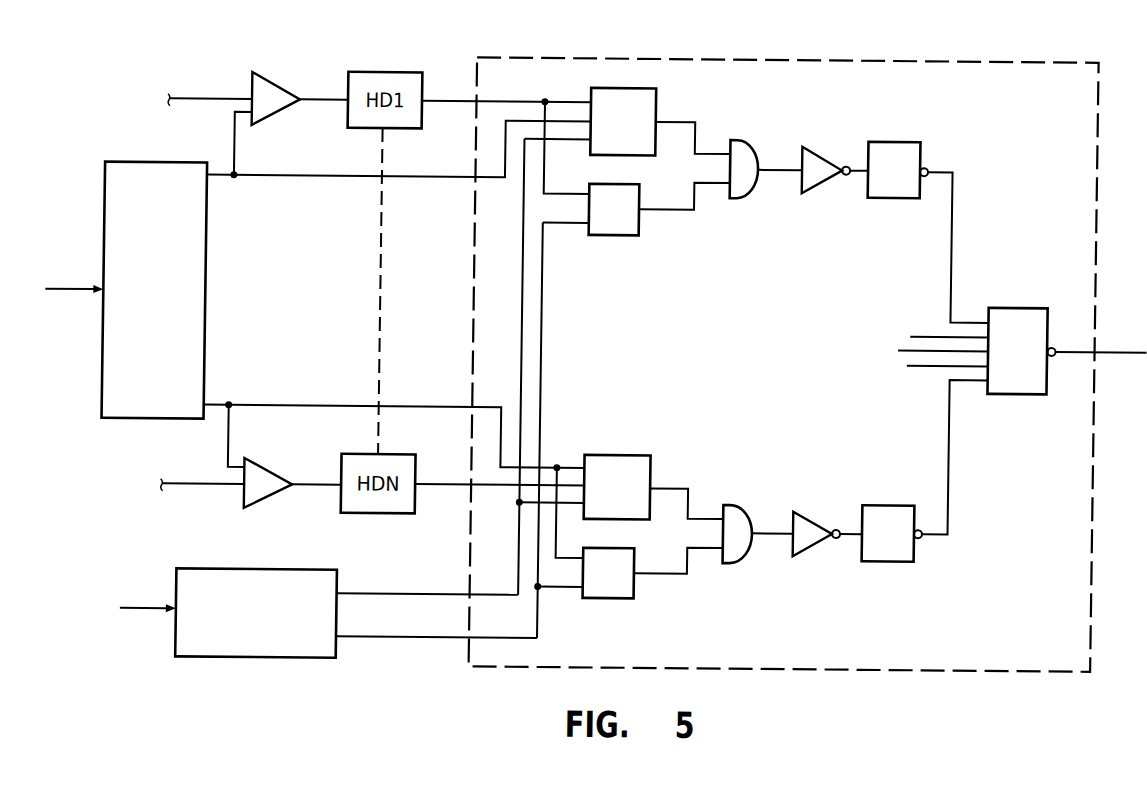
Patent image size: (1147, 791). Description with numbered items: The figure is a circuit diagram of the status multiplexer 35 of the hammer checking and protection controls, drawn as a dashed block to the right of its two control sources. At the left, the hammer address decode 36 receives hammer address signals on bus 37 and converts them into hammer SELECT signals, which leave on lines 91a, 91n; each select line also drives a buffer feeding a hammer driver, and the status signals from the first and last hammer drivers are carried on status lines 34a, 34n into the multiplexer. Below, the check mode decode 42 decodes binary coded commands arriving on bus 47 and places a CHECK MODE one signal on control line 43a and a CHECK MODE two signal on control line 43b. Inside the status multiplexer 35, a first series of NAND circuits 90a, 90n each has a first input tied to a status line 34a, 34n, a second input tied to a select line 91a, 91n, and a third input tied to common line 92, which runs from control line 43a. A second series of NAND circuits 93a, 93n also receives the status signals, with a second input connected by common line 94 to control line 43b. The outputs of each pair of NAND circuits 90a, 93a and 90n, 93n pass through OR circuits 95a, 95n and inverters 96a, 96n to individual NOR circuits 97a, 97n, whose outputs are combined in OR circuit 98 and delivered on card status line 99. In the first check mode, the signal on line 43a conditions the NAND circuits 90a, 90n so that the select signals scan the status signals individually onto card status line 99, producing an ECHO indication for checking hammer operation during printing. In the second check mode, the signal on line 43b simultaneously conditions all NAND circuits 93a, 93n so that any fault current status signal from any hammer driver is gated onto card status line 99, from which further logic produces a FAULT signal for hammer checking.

The status multiplexer 35 is at (682, 52).
The hammer address decode 36 is at (161, 166).
The bus 37 is at (76, 298).
The check mode decode 42 is at (280, 572).
The control line 43a is at (508, 600).
The control line 43b is at (544, 628).
The bus 47 is at (154, 614).
The status line 34a is at (463, 99).
The status line 34n is at (463, 486).
The line 91a is at (356, 178).
The line 91n is at (360, 408).
The common line 92 is at (527, 287).
The common line 94 is at (541, 312).
The NAND circuit 90a is at (657, 93).
The NAND circuit 90n is at (615, 452).
The NAND circuit 93a is at (641, 186).
The NAND circuit 93n is at (643, 548).
The OR circuit 95a is at (750, 128).
The OR circuit 95n is at (754, 518).
The inverter 96a is at (826, 154).
The inverter 96n is at (819, 520).
The NOR circuit 97a is at (888, 138).
The NOR circuit 97n is at (880, 502).
The OR circuit 98 is at (1015, 304).
The card status line 99 is at (1132, 346).